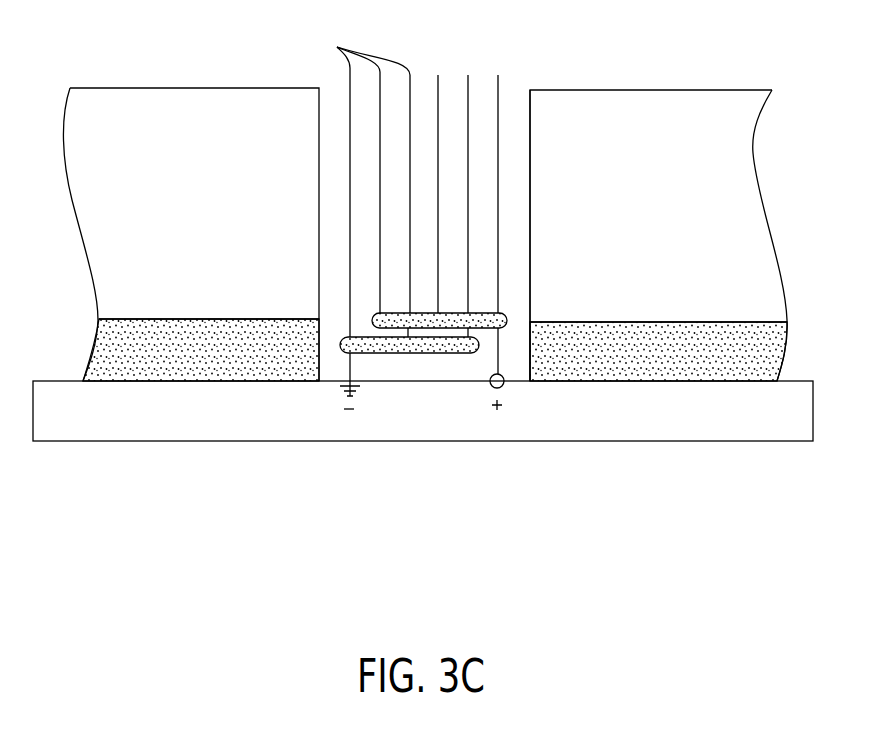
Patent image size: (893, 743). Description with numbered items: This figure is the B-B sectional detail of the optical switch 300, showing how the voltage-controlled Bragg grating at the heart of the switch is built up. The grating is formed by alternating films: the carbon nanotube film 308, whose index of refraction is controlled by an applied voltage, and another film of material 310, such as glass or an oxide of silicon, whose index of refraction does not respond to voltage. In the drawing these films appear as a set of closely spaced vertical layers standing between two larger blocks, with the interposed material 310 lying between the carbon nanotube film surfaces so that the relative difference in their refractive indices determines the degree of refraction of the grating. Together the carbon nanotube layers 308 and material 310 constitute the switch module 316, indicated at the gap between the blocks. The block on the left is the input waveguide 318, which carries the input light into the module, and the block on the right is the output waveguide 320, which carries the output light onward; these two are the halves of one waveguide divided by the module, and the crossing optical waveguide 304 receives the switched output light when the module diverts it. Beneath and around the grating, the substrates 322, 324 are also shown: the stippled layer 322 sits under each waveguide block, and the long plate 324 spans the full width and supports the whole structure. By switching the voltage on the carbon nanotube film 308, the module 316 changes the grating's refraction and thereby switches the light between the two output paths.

The optical switch 300 is at (359, 538).
The optical waveguide 304 is at (262, 88).
The carbon nanotube film layer 308 is at (402, 215).
The material interposed between carbon nanotube film surfaces 310 is at (485, 75).
The switch module 316 is at (527, 67).
The input waveguide 318 is at (191, 208).
The output waveguide 320 is at (722, 88).
The substrate 322 is at (100, 355).
The substrate 324 is at (67, 442).